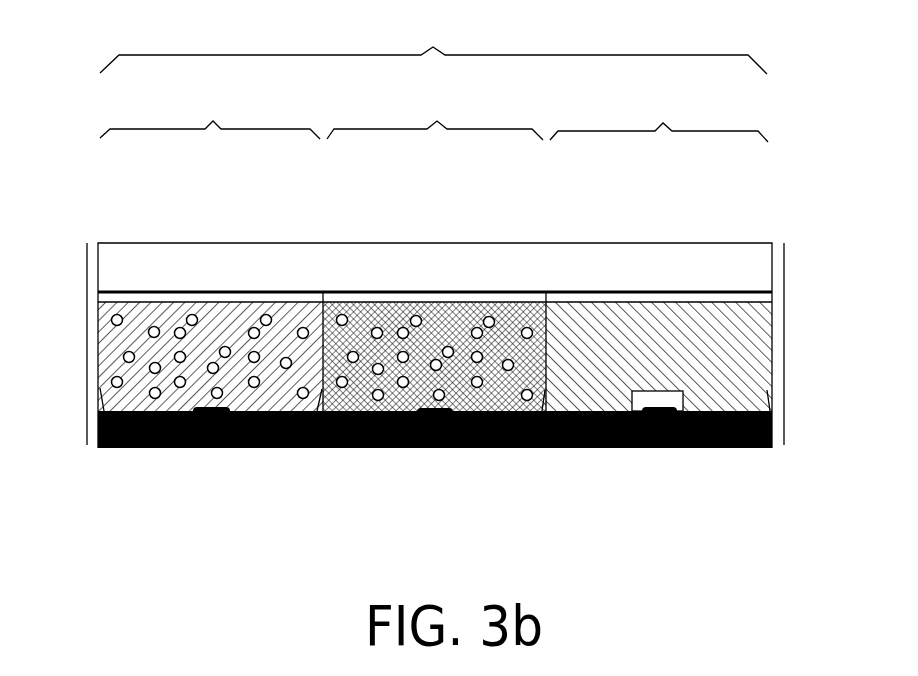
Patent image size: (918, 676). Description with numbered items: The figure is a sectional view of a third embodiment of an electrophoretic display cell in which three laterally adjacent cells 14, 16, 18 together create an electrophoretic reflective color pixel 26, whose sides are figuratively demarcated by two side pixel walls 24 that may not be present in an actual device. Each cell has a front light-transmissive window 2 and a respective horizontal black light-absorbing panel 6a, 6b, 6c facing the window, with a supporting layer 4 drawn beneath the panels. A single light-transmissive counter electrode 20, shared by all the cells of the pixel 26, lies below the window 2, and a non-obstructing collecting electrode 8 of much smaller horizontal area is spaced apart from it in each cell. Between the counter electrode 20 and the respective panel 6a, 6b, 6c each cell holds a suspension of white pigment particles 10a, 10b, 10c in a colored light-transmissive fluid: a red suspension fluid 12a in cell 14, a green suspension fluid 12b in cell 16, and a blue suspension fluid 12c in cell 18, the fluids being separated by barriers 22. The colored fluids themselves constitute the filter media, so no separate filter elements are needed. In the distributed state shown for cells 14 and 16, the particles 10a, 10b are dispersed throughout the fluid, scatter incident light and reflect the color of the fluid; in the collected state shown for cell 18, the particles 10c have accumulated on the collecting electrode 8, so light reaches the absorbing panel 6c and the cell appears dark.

The front light-transmissive window 2 is at (745, 263).
The substrate 4 is at (698, 449).
The light-absorbing panel 6a is at (283, 449).
The light-absorbing panel 6b is at (490, 449).
The light-absorbing panel 6c is at (573, 449).
The collecting electrode 8 is at (214, 449).
The pigment particles 10a is at (154, 397).
The pigment particles 10b is at (378, 398).
The pigment particles 10c is at (627, 449).
The light-transmissive suspension fluid 12a is at (145, 316).
The light-transmissive suspension fluid 12b is at (365, 312).
The light-transmissive suspension fluid 12c is at (579, 320).
The electrophoretic cell 14 is at (211, 251).
The electrophoretic cell 16 is at (436, 251).
The electrophoretic cell 18 is at (659, 118).
The light-transmissive counter electrode 20 is at (260, 295).
The barrier 22 is at (113, 449).
The side pixel wall 24 is at (87, 353).
The electrophoretic reflective color pixel 26 is at (433, 47).